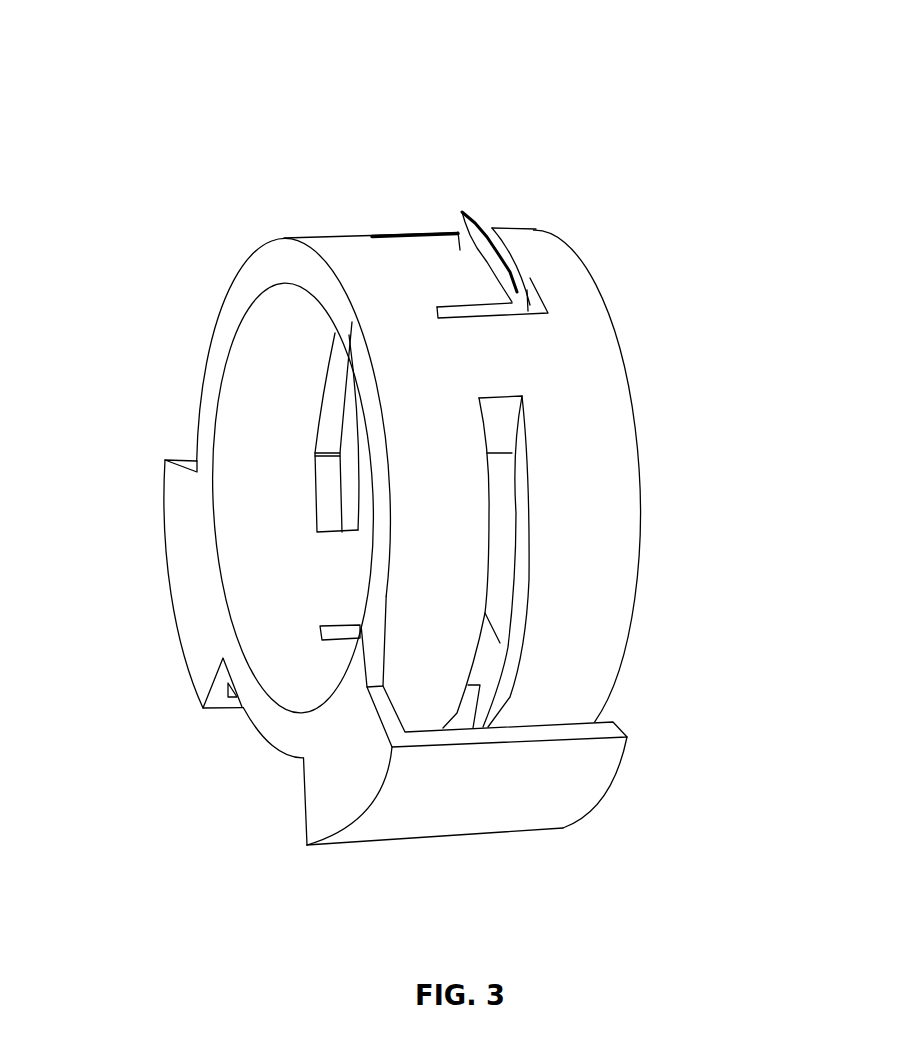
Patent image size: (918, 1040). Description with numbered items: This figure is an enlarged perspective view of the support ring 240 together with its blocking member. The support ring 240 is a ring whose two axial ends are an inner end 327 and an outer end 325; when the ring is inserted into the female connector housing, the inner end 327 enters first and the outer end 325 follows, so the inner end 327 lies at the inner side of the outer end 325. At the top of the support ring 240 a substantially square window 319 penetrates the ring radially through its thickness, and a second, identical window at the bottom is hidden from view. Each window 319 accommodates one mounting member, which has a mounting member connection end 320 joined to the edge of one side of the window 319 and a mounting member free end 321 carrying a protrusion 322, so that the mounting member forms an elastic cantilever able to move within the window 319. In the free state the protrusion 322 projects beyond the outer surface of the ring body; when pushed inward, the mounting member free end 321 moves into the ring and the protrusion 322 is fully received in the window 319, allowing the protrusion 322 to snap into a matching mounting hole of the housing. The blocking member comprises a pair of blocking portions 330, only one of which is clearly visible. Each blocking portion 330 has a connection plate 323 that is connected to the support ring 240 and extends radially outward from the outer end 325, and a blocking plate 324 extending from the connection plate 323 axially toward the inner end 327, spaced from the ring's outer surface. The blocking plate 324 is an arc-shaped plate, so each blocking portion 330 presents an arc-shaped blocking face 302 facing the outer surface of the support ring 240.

The support ring 240 is at (687, 97).
The blocking face 302 is at (613, 722).
The window 319 is at (532, 283).
The mounting member connection end 320 is at (390, 246).
The mounting member free end 321 is at (460, 230).
The protrusion 322 is at (492, 230).
The connection plate 323 is at (317, 793).
The blocking plate 324 is at (565, 822).
The outer end 325 is at (217, 353).
The inner end 327 is at (642, 487).
The blocking portion 330 is at (200, 592).